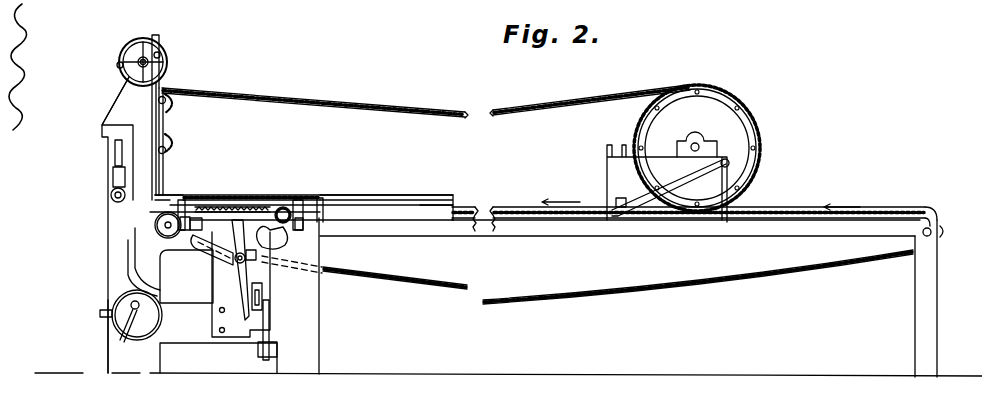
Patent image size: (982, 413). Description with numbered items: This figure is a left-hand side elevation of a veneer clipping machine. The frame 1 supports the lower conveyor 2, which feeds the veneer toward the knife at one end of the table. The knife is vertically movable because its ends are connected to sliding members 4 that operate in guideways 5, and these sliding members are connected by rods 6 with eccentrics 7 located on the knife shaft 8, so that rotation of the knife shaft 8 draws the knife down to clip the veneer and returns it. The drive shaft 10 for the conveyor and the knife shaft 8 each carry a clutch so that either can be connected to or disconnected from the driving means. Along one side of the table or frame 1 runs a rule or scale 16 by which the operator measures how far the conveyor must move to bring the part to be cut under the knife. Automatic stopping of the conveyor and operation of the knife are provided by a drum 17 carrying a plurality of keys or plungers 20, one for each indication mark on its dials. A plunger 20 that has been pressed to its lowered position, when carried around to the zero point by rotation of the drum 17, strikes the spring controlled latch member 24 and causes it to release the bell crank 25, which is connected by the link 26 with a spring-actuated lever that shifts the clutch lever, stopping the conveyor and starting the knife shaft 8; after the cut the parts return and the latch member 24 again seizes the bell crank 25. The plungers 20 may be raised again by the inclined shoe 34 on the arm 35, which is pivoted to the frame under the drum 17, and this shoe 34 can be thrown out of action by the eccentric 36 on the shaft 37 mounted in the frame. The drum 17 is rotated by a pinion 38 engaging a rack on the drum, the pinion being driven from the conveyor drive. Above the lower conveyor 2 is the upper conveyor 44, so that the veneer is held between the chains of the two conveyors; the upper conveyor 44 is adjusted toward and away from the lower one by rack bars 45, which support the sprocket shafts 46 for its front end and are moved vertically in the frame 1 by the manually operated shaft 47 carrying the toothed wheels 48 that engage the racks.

The frame 1 is at (140, 367).
The lower conveyor 2 is at (770, 215).
The sliding members 4 is at (114, 170).
The guideways 5 is at (116, 152).
The rods 6 is at (120, 258).
The eccentrics 7 is at (110, 352).
The knife shaft 8 is at (112, 333).
The drive shaft 10 is at (166, 226).
The rule or scale 16 is at (427, 195).
The drum 17 is at (248, 203).
The keys or plungers 20 is at (213, 197).
The spring controlled latch member 24 is at (257, 303).
The bell crank 25 is at (262, 310).
The link 26 is at (273, 353).
The inclined shoe 34 is at (275, 222).
The arm 35 is at (305, 216).
The eccentric 36 is at (254, 255).
The shaft 37 is at (282, 242).
The pinion 38 is at (272, 210).
The upper conveyor 44 is at (493, 110).
The rack bars 45 is at (153, 40).
The sprocket shafts 46 is at (171, 147).
The manually operated shaft 47 is at (152, 62).
The toothed wheels 48 is at (153, 55).